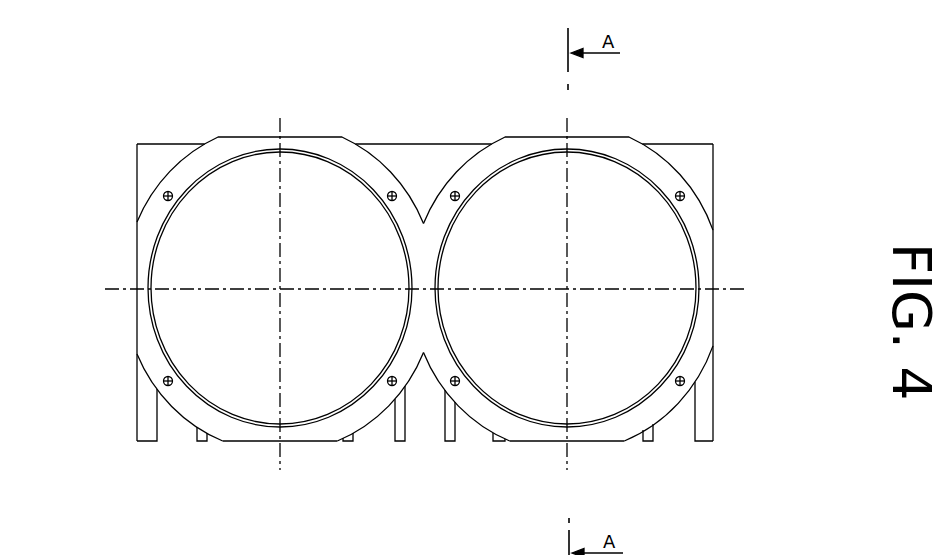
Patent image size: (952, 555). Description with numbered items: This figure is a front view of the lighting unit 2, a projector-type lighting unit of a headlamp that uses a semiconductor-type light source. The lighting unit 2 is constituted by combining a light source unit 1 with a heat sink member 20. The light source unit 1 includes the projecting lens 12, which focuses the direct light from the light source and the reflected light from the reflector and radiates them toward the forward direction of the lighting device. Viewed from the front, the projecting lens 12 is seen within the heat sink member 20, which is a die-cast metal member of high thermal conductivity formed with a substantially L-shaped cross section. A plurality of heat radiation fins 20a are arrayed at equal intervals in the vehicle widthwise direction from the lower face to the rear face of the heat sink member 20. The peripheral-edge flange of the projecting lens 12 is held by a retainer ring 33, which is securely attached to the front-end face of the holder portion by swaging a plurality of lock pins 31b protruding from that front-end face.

The lighting unit 2 is at (116, 114).
The light source unit 1 is at (124, 247).
The heat sink member 20 is at (417, 136).
The heat radiation fins 20a is at (145, 442).
The retainer ring 33 is at (197, 147).
The lock pins 31b is at (173, 200).
The projecting lens 12 is at (250, 398).